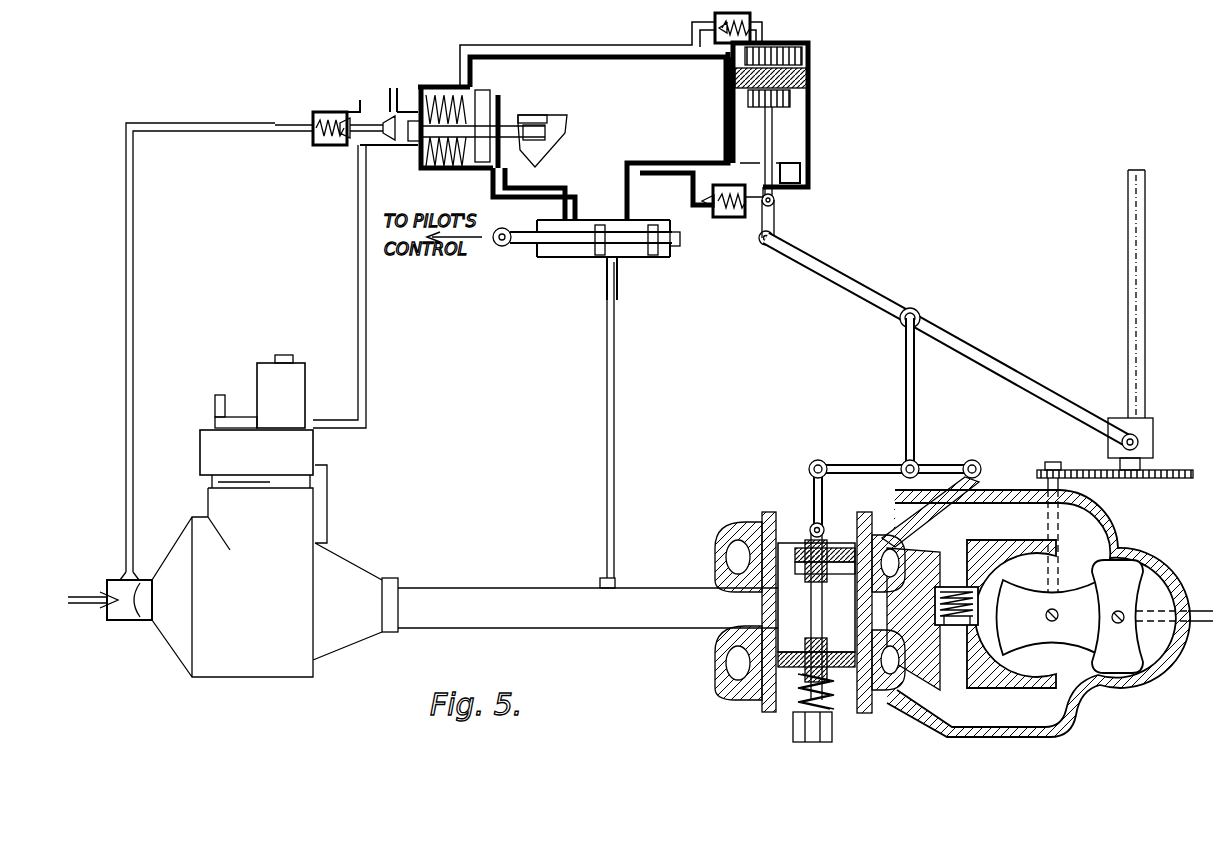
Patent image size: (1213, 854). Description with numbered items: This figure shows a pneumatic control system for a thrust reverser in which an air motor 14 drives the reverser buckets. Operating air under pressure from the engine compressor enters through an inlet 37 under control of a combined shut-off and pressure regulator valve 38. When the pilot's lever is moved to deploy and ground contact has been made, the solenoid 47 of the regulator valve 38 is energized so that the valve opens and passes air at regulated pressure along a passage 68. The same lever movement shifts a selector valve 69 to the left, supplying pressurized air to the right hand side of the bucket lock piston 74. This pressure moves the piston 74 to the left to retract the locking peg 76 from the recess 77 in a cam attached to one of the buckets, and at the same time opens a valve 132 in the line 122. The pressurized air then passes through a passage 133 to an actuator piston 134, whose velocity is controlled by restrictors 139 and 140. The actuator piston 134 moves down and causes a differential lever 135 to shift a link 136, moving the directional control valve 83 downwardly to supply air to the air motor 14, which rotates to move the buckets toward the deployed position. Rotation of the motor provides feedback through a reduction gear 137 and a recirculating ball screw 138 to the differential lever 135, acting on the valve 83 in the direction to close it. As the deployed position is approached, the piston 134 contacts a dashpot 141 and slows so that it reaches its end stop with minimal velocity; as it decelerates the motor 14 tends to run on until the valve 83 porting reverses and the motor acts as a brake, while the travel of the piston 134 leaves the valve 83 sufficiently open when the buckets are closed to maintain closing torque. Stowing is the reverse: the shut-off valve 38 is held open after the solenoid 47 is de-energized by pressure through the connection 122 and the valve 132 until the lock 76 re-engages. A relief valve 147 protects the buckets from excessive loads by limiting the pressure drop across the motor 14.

The air motor 14 is at (1130, 570).
The inlet 37 is at (122, 622).
The combined shut-off and pressure regulator valve 38 is at (352, 562).
The solenoid 47 is at (262, 370).
The passage 68 is at (582, 628).
The selector valve 69 is at (600, 245).
The bucket lock piston 74 is at (500, 108).
The locking peg 76 is at (534, 123).
The recess 77 is at (560, 130).
The directional control valve 83 is at (770, 556).
The line 122 is at (134, 188).
The valve 132 is at (355, 112).
The passage 133 is at (542, 50).
The actuator piston 134 is at (810, 82).
The differential lever 135 is at (880, 300).
The link 136 is at (860, 465).
The reduction gear 137 is at (1075, 470).
The recirculating ball screw 138 is at (1128, 285).
The restrictor 139 is at (668, 50).
The restrictor 140 is at (658, 165).
The dashpot 141 is at (806, 172).
The relief valve 147 is at (952, 626).